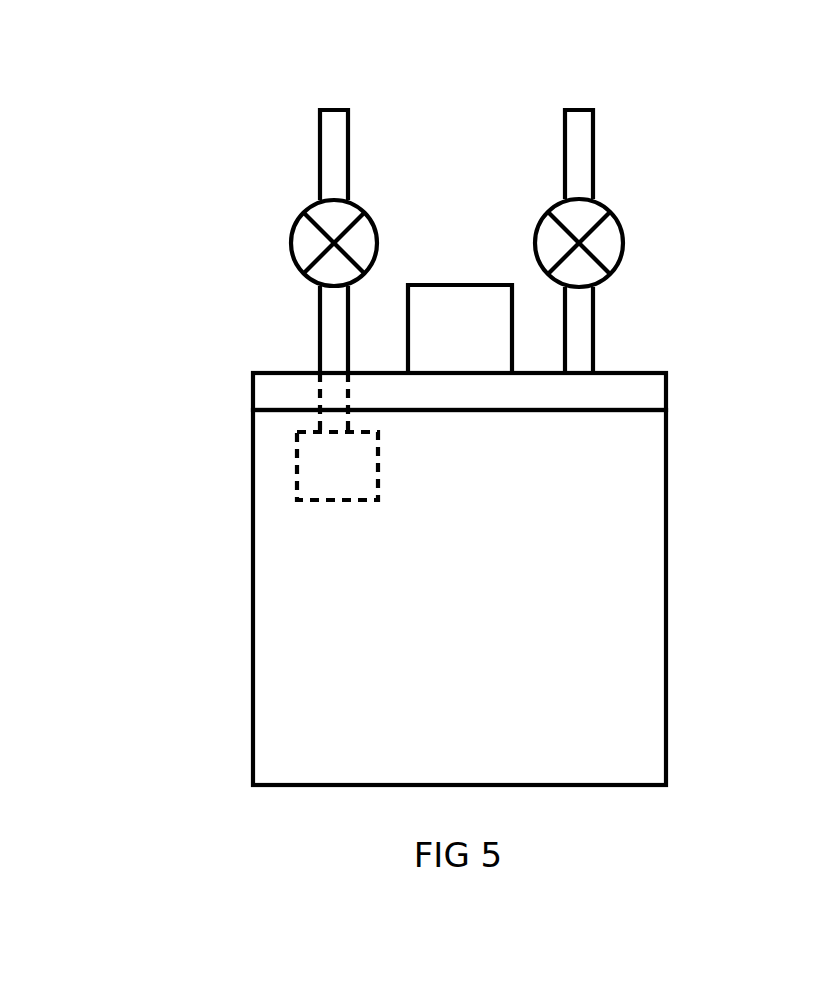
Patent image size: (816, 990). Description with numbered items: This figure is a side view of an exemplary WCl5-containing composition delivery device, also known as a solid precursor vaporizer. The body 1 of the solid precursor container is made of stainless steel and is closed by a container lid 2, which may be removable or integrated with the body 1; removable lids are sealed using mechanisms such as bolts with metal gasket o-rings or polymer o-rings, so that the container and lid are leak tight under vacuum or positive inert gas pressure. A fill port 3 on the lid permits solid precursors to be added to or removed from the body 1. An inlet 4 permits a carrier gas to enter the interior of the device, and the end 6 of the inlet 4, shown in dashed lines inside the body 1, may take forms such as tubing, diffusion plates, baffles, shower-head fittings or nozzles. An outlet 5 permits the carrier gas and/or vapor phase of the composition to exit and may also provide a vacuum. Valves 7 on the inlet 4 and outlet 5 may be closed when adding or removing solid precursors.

The body 1 is at (365, 617).
The container lid 2 is at (250, 392).
The fill port 3 is at (455, 277).
The inlet 4 is at (313, 105).
The outlet 5 is at (592, 92).
The end of inlet 6 is at (337, 466).
The valves 7 is at (537, 193).